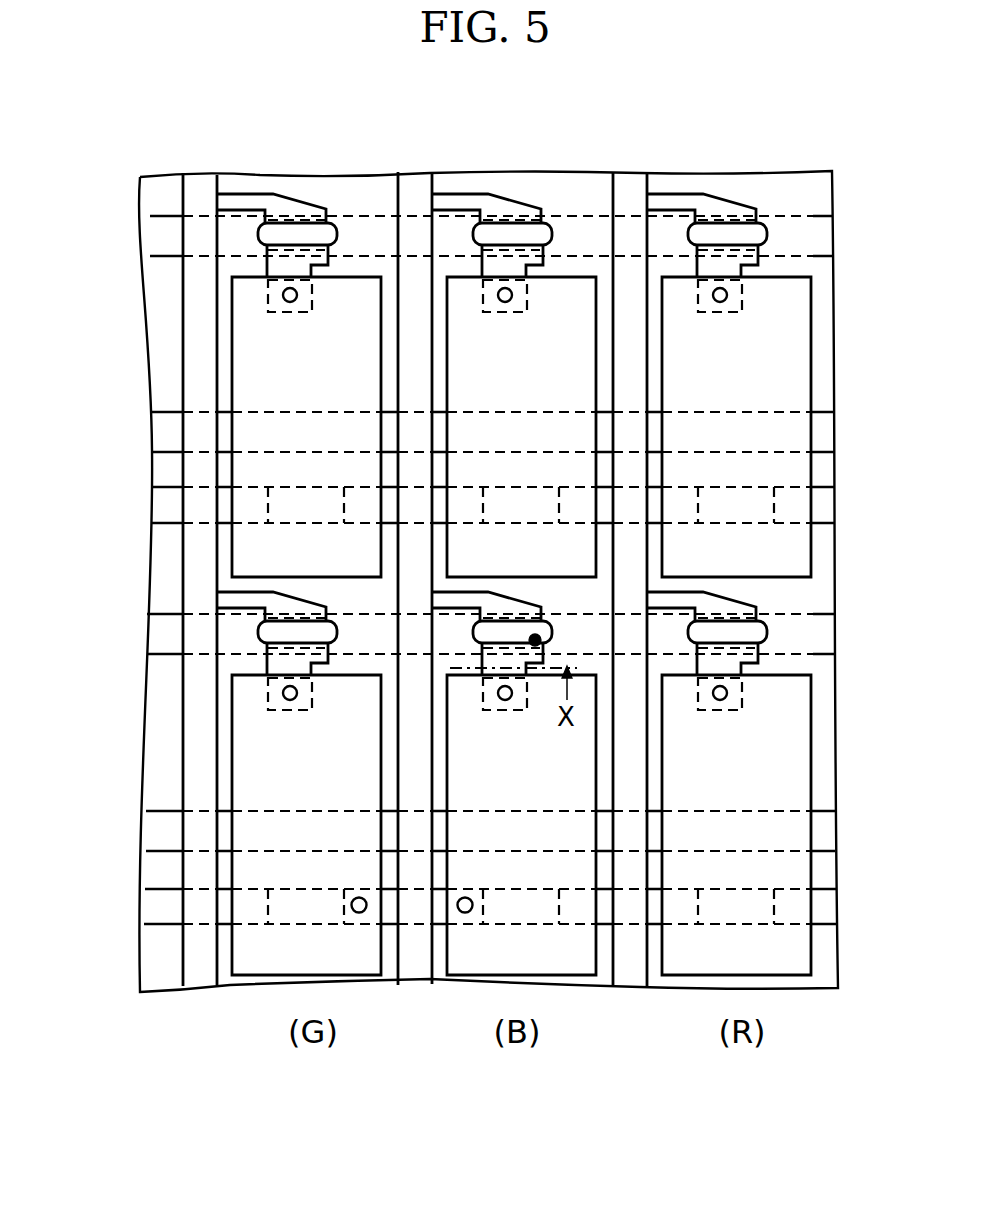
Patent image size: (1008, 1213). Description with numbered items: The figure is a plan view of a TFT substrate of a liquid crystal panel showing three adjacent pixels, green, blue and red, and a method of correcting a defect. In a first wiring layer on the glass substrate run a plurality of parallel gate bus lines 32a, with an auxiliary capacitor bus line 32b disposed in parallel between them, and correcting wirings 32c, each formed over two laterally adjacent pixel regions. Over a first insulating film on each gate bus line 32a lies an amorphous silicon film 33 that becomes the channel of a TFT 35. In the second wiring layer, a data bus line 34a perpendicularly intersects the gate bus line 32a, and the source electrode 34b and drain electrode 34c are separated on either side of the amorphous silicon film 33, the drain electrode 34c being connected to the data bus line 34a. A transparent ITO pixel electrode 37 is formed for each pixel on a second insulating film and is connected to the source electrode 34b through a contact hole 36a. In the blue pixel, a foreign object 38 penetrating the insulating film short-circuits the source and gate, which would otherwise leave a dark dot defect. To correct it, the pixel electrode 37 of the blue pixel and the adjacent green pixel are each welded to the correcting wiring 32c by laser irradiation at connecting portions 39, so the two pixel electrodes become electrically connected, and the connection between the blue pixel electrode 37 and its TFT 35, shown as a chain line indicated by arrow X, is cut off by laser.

The gate bus line 32a is at (152, 241).
The auxiliary capacitor bus line 32b is at (162, 432).
The correcting wiring 32c is at (162, 504).
The amorphous silicon film 33 is at (262, 193).
The data bus line 34a is at (193, 173).
The source electrode 34b is at (323, 266).
The drain electrode 34c is at (305, 194).
The TFT 35 is at (333, 196).
The contact hole 36a is at (289, 308).
The pixel electrode 37 is at (245, 370).
The foreign object 38 is at (537, 637).
The connecting portion 39 is at (355, 912).